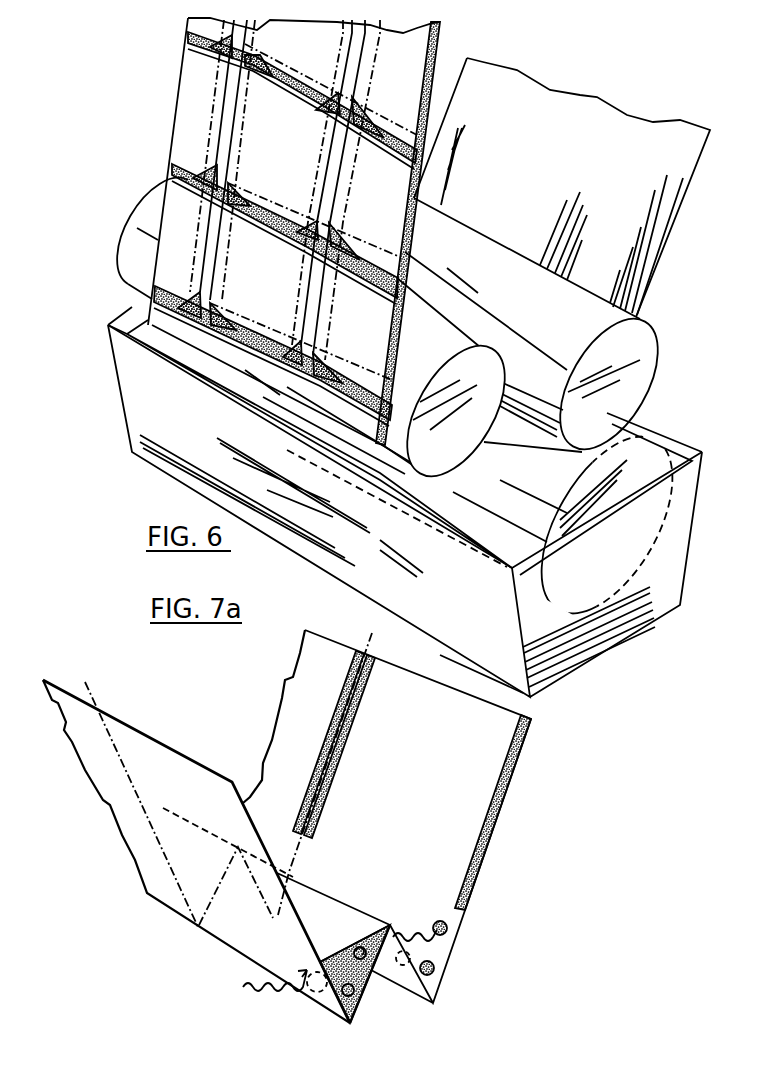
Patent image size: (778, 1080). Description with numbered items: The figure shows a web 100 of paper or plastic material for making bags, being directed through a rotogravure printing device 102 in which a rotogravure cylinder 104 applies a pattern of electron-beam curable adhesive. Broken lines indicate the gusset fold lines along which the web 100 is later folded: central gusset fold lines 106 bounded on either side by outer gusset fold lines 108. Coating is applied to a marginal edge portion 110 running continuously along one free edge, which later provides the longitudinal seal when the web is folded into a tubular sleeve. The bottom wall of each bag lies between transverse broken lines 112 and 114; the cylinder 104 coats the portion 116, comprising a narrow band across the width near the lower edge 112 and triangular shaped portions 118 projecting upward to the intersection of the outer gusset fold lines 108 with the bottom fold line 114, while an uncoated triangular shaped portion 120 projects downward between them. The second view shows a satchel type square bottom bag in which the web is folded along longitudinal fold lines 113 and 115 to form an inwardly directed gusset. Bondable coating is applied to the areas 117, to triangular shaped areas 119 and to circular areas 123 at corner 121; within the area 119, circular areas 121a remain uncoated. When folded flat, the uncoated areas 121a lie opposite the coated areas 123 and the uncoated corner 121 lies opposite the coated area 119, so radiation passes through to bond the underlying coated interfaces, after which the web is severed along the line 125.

In FIG. 6, the web 100 is at (183, 68).
In FIG. 6, the rotogravure printing device 102 is at (672, 585).
In FIG. 6, the rotogravure cylinder 104 is at (647, 460).
In FIG. 6, the central gusset fold lines 106 is at (233, 135).
In FIG. 6, the outer gusset fold lines 108 is at (220, 100).
In FIG. 6, the marginal edge portion 110 is at (430, 100).
In FIG. 6, the lower edge line 112 is at (287, 103).
In FIG. 6, the bottom fold line 114 is at (266, 57).
In FIG. 6, the coated portion 116 is at (263, 363).
In FIG. 6, the triangular shaped portions 118 is at (195, 295).
In FIG. 6, the uncoated triangular shaped portion 120 is at (217, 300).
In FIG. 7a, the longitudinal fold line 113 is at (223, 940).
In FIG. 7a, the longitudinal fold line 115 is at (333, 895).
In FIG. 7a, the coated areas 117 is at (342, 738).
In FIG. 7a, the triangular shaped areas 119 is at (368, 987).
In FIG. 7a, the corner 121 is at (443, 965).
In FIG. 7a, the uncoated circular areas 121a is at (347, 993).
In FIG. 7a, the circular areas 123 is at (447, 932).
In FIG. 7a, the severing line 125 is at (357, 706).